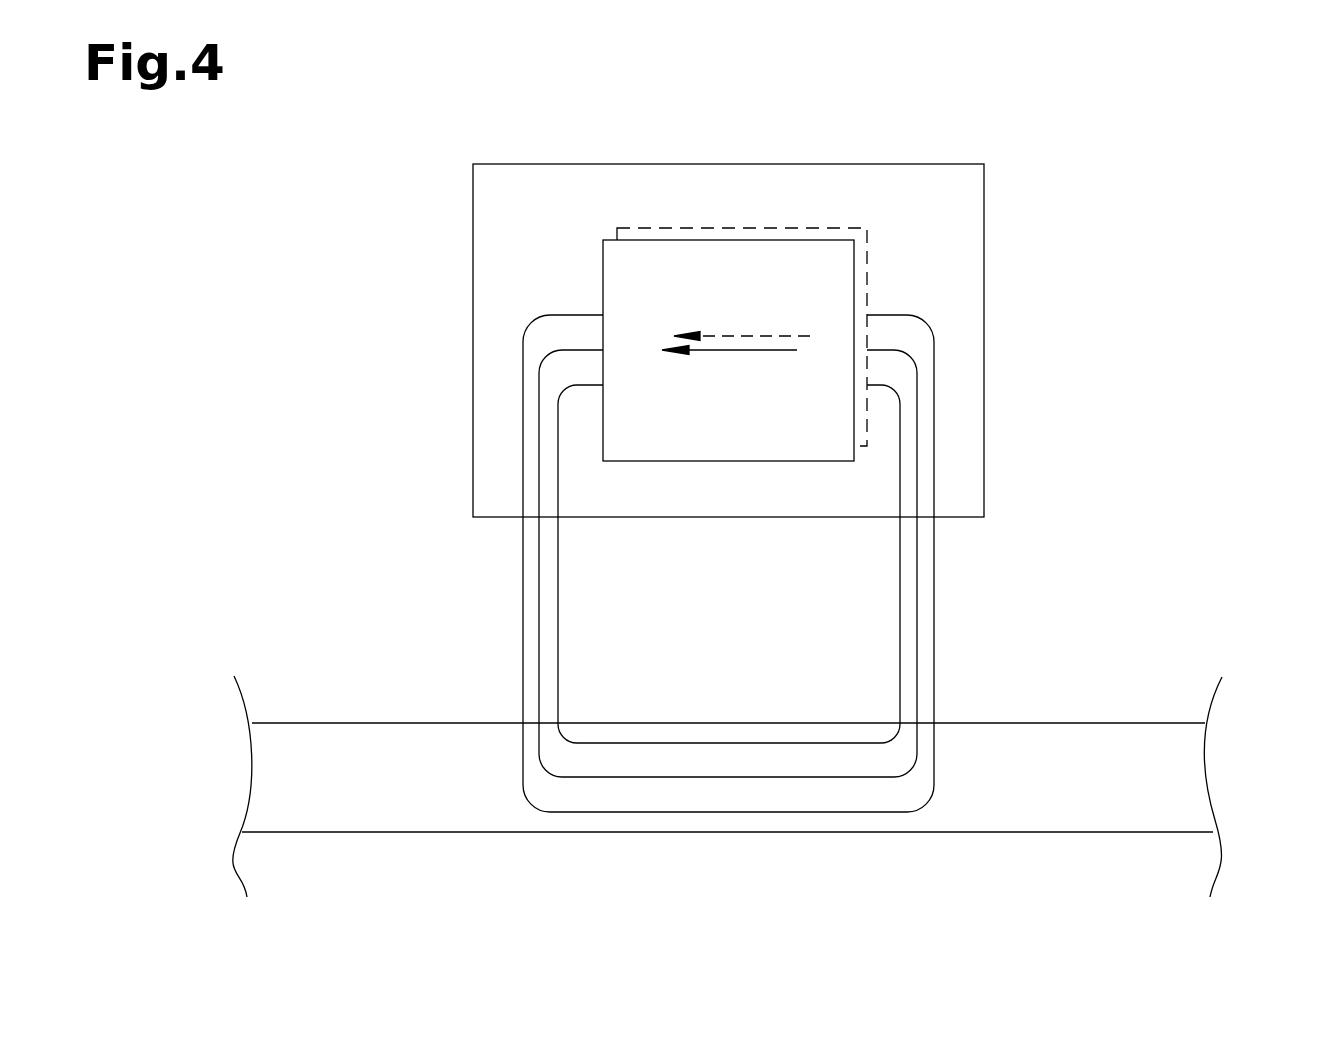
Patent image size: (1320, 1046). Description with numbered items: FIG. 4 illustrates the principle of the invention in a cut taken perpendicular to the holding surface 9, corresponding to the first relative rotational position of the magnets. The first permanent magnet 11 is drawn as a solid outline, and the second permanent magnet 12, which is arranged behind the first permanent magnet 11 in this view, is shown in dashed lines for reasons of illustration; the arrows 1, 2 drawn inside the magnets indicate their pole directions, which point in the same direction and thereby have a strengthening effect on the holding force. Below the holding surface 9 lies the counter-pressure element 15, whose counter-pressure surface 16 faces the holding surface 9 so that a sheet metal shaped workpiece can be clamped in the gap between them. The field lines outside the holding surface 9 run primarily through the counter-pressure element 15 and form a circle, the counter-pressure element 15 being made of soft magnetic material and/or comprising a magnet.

The movement direction arrow 1 is at (727, 350).
The displaced movement direction arrow 2 is at (728, 336).
The holding surface 9 is at (730, 516).
The first permanent magnet 11 is at (685, 461).
The second permanent magnet 12 is at (808, 228).
The counter-pressure element 15 is at (1042, 833).
The counter-pressure surface 16 is at (1073, 723).